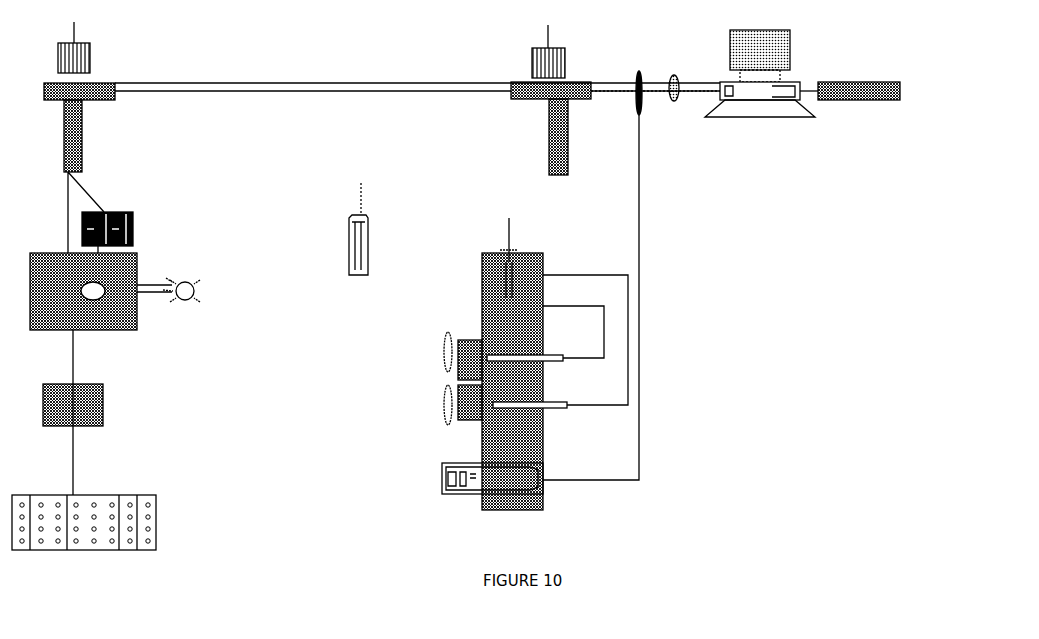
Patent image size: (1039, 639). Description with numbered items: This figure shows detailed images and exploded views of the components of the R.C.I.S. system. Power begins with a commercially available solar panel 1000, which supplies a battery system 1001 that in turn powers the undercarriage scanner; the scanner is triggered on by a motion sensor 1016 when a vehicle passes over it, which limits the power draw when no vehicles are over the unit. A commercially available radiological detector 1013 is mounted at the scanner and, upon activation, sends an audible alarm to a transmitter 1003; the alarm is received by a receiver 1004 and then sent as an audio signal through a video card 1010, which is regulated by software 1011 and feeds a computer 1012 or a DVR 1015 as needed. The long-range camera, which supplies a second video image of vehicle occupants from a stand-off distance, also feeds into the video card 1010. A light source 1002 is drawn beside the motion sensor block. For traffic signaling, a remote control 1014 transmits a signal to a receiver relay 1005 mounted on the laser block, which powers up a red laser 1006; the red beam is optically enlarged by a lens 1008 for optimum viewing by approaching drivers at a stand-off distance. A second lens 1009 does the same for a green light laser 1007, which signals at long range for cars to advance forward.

The solar panel 1000 is at (109, 522).
The battery system 1001 is at (99, 412).
The light source 1002 is at (186, 290).
The transmitter 1003 is at (88, 97).
The receiver 1004 is at (561, 100).
The receiver relay 1005 is at (507, 364).
The red laser 1006 is at (545, 347).
The green light laser 1007 is at (560, 356).
The lens 1008 is at (429, 352).
The lens 1009 is at (429, 405).
The video card 1010 is at (562, 282).
The software 1011 is at (671, 66).
The computer 1012 is at (760, 89).
The radiological detector 1013 is at (124, 212).
The remote control 1014 is at (505, 225).
The DVR 1015 is at (859, 77).
The motion sensor 1016 is at (52, 332).